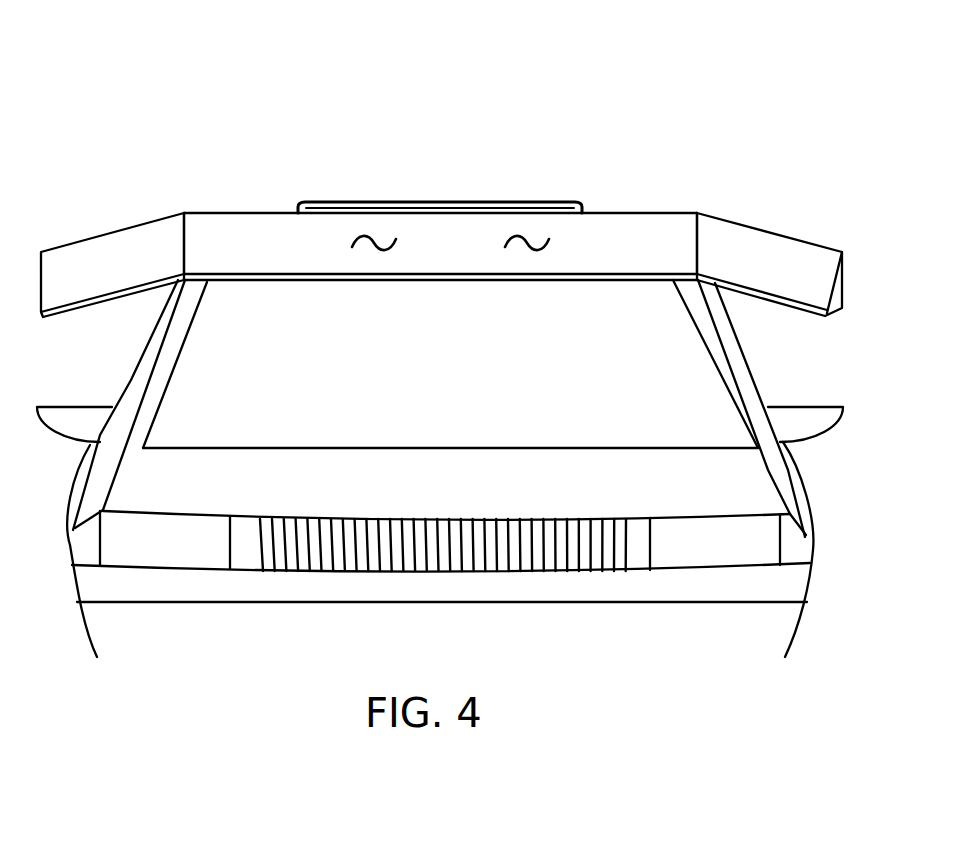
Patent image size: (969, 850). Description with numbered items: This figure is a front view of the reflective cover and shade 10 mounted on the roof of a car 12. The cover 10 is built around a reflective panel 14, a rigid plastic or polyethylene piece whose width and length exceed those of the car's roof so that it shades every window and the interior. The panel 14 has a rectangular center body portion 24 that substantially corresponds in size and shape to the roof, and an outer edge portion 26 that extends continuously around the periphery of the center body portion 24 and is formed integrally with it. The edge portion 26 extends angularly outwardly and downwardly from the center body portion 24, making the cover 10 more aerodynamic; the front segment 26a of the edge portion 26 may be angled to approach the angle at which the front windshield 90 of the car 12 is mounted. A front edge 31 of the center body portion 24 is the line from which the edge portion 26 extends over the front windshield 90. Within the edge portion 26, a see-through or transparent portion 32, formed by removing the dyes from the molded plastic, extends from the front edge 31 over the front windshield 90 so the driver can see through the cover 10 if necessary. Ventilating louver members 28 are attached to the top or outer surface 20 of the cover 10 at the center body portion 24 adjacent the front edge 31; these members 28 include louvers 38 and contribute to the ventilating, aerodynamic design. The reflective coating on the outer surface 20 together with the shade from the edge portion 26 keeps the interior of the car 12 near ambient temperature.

The reflective cover and shade 10 is at (446, 200).
The car 12 is at (793, 470).
The reflective panel 14 is at (757, 222).
The top or outer surface 20 is at (110, 233).
The center body portion 24 is at (215, 213).
The outer edge portion 26 is at (360, 250).
The segment of outer edge portion 26a is at (450, 242).
The ventilating louver members 28 is at (403, 200).
The front edge 31 is at (627, 217).
The transparent portion 32 is at (262, 232).
The louvers 38 is at (558, 200).
The front windshield 90 is at (332, 427).